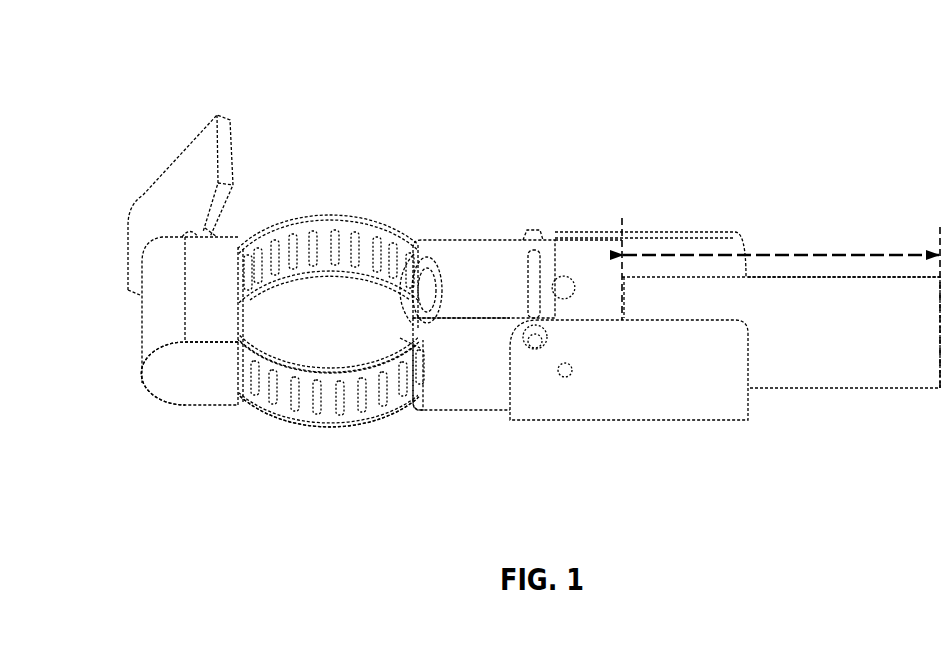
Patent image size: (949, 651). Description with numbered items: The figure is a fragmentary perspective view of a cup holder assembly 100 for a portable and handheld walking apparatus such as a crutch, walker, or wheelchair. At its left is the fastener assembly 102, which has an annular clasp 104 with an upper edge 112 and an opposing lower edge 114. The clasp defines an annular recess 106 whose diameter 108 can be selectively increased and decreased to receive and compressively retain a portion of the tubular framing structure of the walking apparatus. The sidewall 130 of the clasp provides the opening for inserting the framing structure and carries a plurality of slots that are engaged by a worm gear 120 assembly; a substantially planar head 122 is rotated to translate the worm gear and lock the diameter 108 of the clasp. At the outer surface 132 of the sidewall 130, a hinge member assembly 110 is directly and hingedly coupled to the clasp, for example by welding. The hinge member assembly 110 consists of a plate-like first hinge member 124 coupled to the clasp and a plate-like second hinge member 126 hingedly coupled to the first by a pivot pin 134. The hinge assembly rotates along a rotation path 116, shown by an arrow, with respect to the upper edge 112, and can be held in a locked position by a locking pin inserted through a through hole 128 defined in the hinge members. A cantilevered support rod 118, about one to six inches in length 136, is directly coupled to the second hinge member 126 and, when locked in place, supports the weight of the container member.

The cup holder assembly 100 is at (362, 140).
The fastener assembly 102 is at (207, 420).
The annular clasp 104 is at (330, 428).
The annular recess 106 is at (330, 341).
The diameter 108 is at (327, 295).
The hinge member assembly 110 is at (560, 226).
The upper edge 112 is at (413, 238).
The lower edge 114 is at (286, 428).
The rotation path 116 is at (536, 314).
The cantilevered support rod 118 is at (865, 355).
The worm gear 120 is at (215, 315).
The substantially planar head 122 is at (165, 190).
The first hinge member 124 is at (448, 397).
The second hinge member 126 is at (604, 395).
The through hole 128 is at (565, 280).
The sidewall 130 is at (303, 237).
The outer surface 132 is at (311, 412).
The pivot pin 134 is at (535, 277).
The length 136 is at (854, 254).